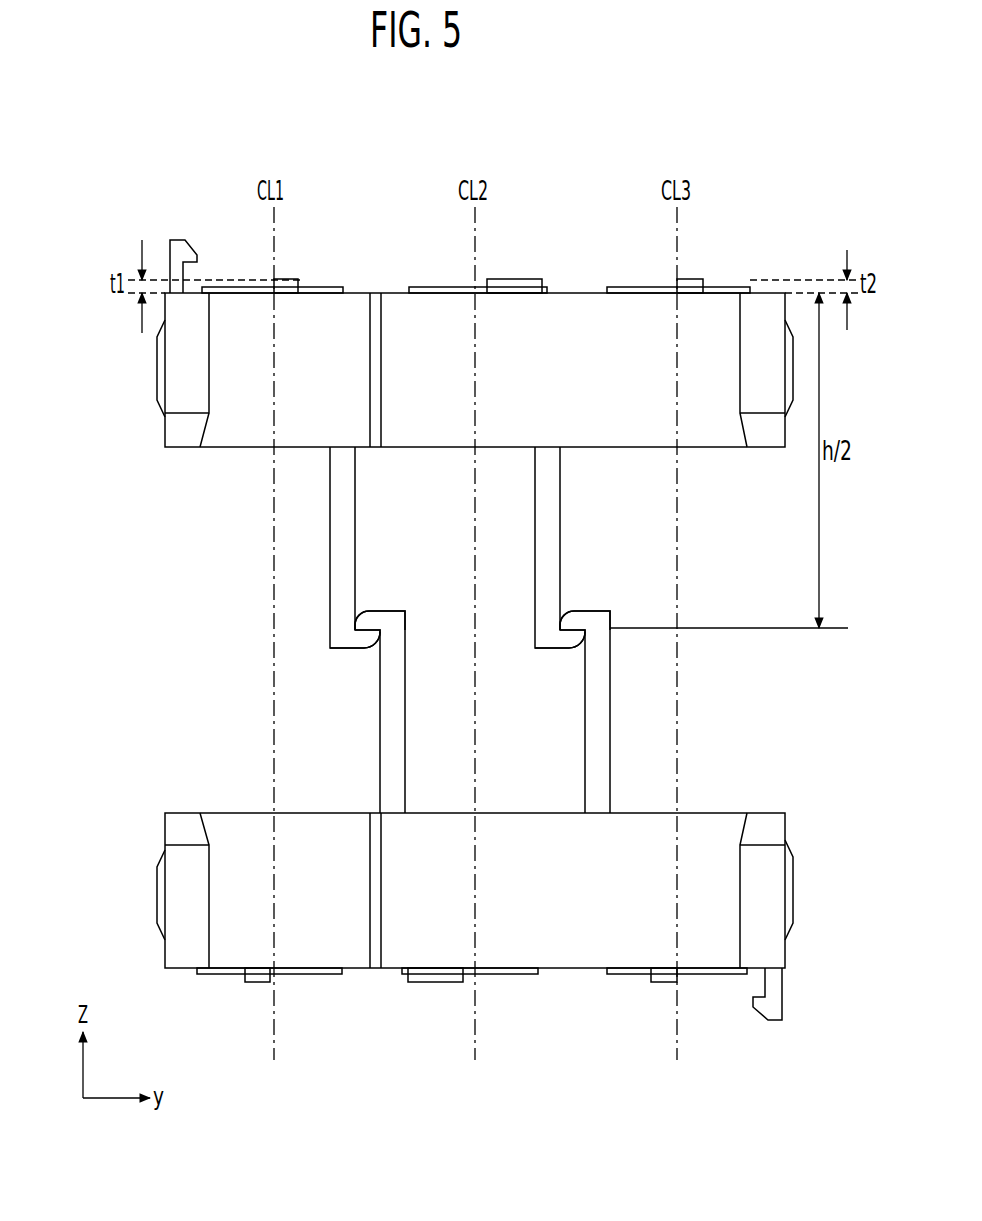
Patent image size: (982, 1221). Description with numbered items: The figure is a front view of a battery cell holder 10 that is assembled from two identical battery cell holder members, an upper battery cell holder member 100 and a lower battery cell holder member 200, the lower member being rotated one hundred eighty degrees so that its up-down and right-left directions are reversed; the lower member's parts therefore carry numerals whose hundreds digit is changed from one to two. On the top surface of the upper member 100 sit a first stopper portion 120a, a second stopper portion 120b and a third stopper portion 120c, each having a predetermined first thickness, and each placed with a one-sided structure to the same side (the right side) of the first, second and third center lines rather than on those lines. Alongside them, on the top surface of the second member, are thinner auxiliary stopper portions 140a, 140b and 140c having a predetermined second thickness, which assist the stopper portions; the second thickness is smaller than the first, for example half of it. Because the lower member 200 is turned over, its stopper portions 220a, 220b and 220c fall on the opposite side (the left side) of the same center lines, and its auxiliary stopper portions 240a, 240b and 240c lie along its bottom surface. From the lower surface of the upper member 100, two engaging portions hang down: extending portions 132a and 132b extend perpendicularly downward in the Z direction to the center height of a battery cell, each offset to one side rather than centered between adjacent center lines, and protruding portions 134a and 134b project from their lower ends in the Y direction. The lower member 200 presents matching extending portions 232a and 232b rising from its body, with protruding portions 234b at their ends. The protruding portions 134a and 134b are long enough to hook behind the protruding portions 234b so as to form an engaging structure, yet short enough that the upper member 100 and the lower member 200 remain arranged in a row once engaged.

The battery cell holder 10 is at (223, 117).
The battery cell holder member 100 is at (120, 364).
The battery cell holder member 200 is at (120, 891).
The first stopper portion 120a is at (282, 280).
The second stopper portion 120b is at (517, 280).
The third stopper portion 120c is at (690, 280).
The auxiliary stopper portion 140a is at (330, 284).
The auxiliary stopper portion 140b is at (430, 284).
The auxiliary stopper portion 140c is at (743, 284).
The extending portion 132a is at (338, 522).
The extending portion 132b is at (560, 481).
The protruding portion 134a is at (352, 650).
The protruding portion 134b is at (557, 650).
The extending portion 232a is at (590, 780).
The extending portion 232b is at (388, 780).
The protruding portion 234b is at (384, 618).
The stopper portion 220a is at (663, 983).
The stopper portion 220b is at (423, 983).
The stopper portion 220c is at (258, 983).
The auxiliary stopper portion 240a is at (705, 975).
The auxiliary stopper portion 240b is at (503, 975).
The auxiliary stopper portion 240c is at (320, 975).